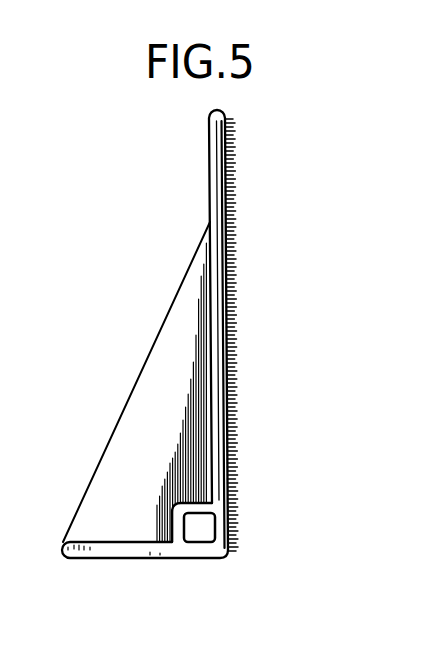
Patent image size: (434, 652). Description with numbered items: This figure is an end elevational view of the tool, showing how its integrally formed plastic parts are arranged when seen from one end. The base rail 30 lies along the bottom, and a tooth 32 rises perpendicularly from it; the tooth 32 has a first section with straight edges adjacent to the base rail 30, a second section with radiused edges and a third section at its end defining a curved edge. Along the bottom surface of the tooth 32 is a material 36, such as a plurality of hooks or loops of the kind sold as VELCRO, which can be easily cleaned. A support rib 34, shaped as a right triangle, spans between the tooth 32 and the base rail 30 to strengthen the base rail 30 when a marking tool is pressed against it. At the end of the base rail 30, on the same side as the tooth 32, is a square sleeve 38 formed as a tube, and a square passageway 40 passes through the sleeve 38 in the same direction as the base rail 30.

The base rail 30 is at (126, 549).
The tooth 32 is at (221, 310).
The support rib 34 is at (163, 355).
The material 36 is at (238, 231).
The square sleeve 38 is at (198, 503).
The square passageway 40 is at (203, 536).